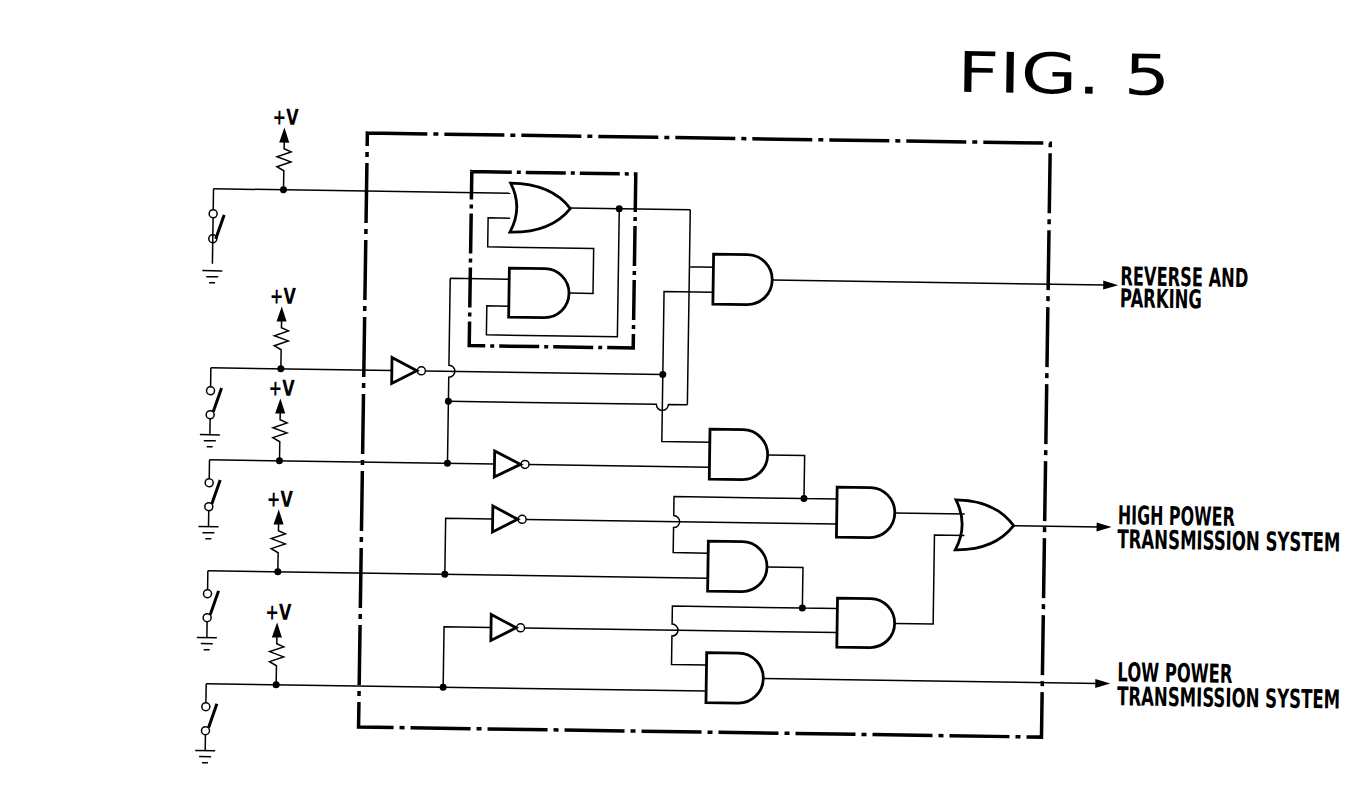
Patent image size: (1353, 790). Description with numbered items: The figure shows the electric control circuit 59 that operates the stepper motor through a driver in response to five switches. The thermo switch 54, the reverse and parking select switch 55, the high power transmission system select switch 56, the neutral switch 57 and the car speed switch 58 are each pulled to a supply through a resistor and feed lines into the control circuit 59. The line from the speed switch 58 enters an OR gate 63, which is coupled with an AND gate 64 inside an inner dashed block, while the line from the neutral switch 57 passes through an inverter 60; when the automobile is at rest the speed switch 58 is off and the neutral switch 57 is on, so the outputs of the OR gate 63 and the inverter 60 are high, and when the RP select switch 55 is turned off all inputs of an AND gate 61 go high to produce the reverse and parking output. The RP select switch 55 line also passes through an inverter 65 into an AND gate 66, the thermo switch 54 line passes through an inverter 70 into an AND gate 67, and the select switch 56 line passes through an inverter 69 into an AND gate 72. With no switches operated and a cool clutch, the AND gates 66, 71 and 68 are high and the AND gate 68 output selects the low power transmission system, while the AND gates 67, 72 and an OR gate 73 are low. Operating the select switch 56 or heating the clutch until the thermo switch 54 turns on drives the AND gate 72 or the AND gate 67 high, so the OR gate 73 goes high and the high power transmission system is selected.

The thermo switch 54 is at (205, 626).
The reverse and parking select switch 55 is at (204, 511).
The high power transmission system select switch 56 is at (206, 733).
The neutral switch 57 is at (205, 416).
The car speed switch 58 is at (206, 240).
The control circuit 59 is at (1046, 184).
The inverter 60 is at (421, 351).
The AND gate 61 is at (787, 252).
The OR gate 63 is at (557, 191).
The AND gate 64 is at (557, 315).
The inverter 65 is at (535, 446).
The AND gate 66 is at (783, 422).
The AND gate 67 is at (895, 481).
The AND gate 68 is at (756, 701).
The inverter 69 is at (532, 617).
The inverter 70 is at (536, 513).
The AND gate 71 is at (766, 560).
The AND gate 72 is at (886, 645).
The OR gate 73 is at (1021, 492).